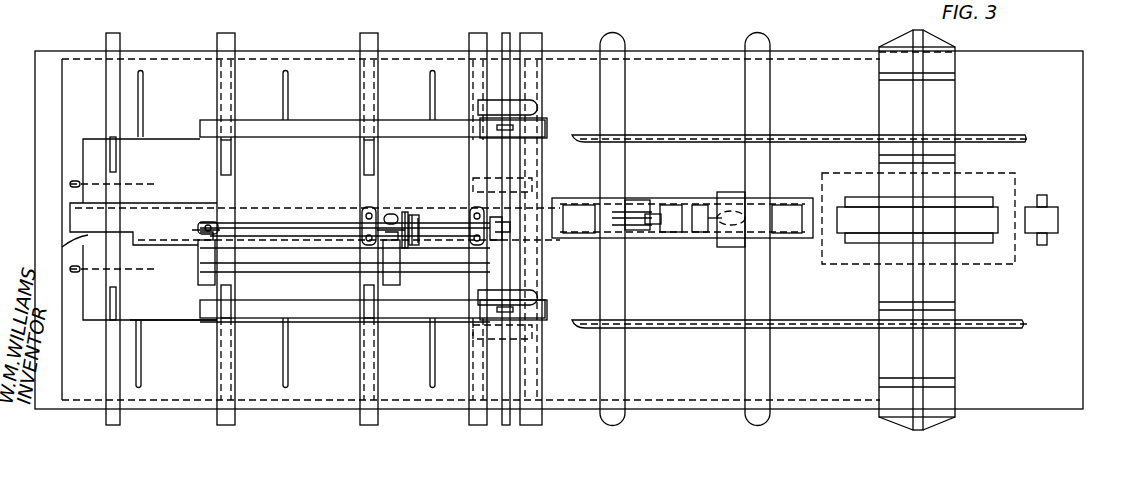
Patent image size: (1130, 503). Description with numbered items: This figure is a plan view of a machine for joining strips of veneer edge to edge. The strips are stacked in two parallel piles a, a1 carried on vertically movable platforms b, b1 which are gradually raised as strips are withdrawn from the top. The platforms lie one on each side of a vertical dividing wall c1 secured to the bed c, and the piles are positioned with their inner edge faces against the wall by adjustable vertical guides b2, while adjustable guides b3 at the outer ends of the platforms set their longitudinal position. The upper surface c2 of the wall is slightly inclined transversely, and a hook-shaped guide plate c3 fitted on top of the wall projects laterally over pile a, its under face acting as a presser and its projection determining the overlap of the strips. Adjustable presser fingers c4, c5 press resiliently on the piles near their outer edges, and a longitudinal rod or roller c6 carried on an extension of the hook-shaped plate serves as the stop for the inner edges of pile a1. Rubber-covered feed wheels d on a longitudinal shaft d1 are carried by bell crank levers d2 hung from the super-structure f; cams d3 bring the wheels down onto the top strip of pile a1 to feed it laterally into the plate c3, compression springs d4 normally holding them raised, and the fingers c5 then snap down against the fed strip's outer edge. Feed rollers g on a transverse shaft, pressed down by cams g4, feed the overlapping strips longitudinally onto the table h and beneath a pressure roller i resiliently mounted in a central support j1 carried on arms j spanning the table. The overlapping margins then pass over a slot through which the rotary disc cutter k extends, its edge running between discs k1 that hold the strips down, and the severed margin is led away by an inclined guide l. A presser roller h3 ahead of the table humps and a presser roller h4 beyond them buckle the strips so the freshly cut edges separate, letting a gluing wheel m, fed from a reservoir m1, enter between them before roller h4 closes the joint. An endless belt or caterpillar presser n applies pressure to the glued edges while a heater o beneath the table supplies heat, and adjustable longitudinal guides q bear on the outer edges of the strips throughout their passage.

The pile of veneer strips a is at (173, 302).
The pile of veneer strips a1 is at (141, 171).
The vertically movable platform b is at (238, 229).
The vertically movable platform b1 is at (215, 128).
The adjustable vertical guide b2 is at (142, 136).
The adjustable guide b3 is at (70, 184).
The bed c is at (460, 229).
The central dividing wall c1 is at (90, 237).
The upper surface of the wall c2 is at (299, 224).
The hook-shaped guide plate c3 is at (320, 220).
The adjustable presser finger c4 is at (112, 158).
The adjustable presser finger c5 is at (110, 312).
The presser rod or roller c6 is at (160, 250).
The feed wheel d is at (205, 268).
The longitudinal shaft d1 is at (288, 246).
The bell crank lever d2 is at (206, 225).
The cam d3 is at (196, 228).
The compression spring d4 is at (200, 250).
The super-structure f is at (402, 128).
The feed roller g is at (548, 140).
The cam g4 is at (500, 135).
The table h is at (716, 62).
The presser roller h3 is at (730, 204).
The presser roller h4 is at (786, 215).
The pressure roller i is at (580, 212).
The arm j is at (612, 62).
The central longitudinal support j1 is at (625, 208).
The rotary disc cutter k is at (652, 232).
The supporting disc k1 is at (640, 215).
The inclined guide l is at (672, 212).
The gluing wheel m is at (712, 238).
The glue reservoir m1 is at (733, 230).
The endless belt presser n is at (858, 238).
The heater o is at (1015, 180).
The adjustable longitudinal guide q is at (855, 328).